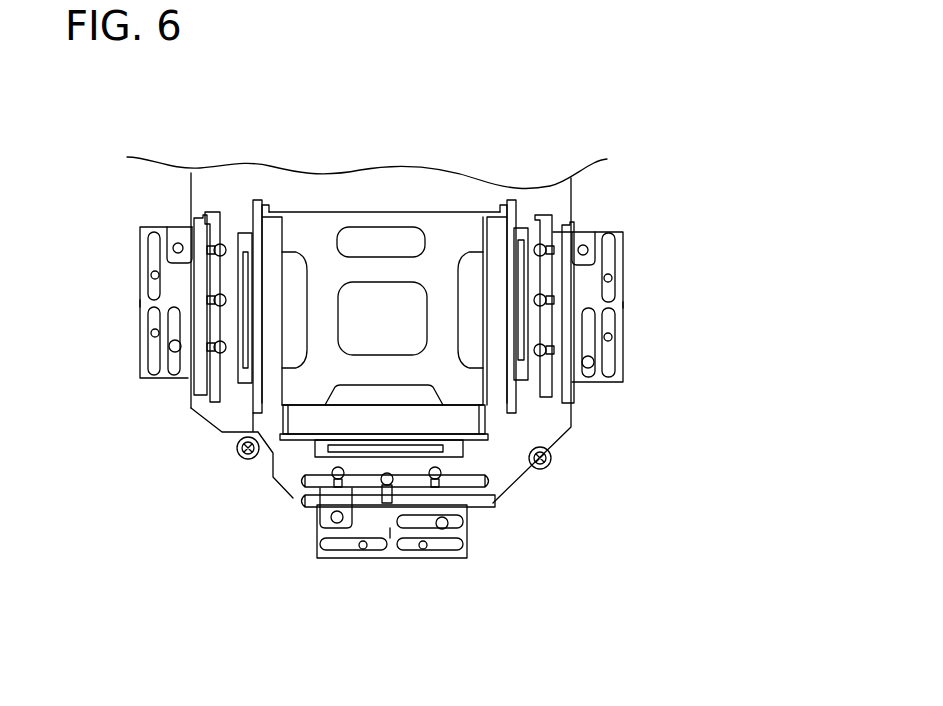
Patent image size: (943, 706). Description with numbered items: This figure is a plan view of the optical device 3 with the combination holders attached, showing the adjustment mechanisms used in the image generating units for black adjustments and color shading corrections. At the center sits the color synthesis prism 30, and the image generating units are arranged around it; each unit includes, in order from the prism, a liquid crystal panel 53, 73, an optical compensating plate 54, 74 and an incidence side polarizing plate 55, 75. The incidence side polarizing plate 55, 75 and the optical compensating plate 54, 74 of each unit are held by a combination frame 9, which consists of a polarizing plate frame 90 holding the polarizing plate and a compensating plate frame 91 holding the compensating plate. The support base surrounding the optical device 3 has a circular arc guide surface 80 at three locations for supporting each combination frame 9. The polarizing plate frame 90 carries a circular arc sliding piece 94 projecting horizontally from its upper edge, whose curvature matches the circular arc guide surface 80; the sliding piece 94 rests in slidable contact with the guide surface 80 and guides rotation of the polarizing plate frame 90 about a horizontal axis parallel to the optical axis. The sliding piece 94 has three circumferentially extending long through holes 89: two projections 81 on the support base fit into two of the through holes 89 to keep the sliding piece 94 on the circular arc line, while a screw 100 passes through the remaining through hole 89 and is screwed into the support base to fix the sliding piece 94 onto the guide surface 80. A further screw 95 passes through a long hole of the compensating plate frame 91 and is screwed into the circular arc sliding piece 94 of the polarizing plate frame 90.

The optical device 3 is at (384, 290).
The combination frame 9 is at (173, 108).
The color synthesis prism 30 is at (417, 305).
The liquid crystal panel 53 is at (240, 410).
The optical compensating plate 54 is at (213, 406).
The incidence side polarizing plate 55 is at (190, 393).
The liquid crystal panel 73 is at (518, 400).
The optical compensating plate 74 is at (415, 456).
The incidence side polarizing plate 75 is at (572, 393).
The circular arc guide surface 80 is at (153, 382).
The projection 81 is at (153, 276).
The long through hole 89 is at (150, 237).
The polarizing plate frame 90 is at (203, 217).
The compensating plate frame 91 is at (222, 213).
The circular arc sliding piece 94 is at (148, 312).
The screw 95 is at (177, 243).
The screw 100 is at (170, 348).